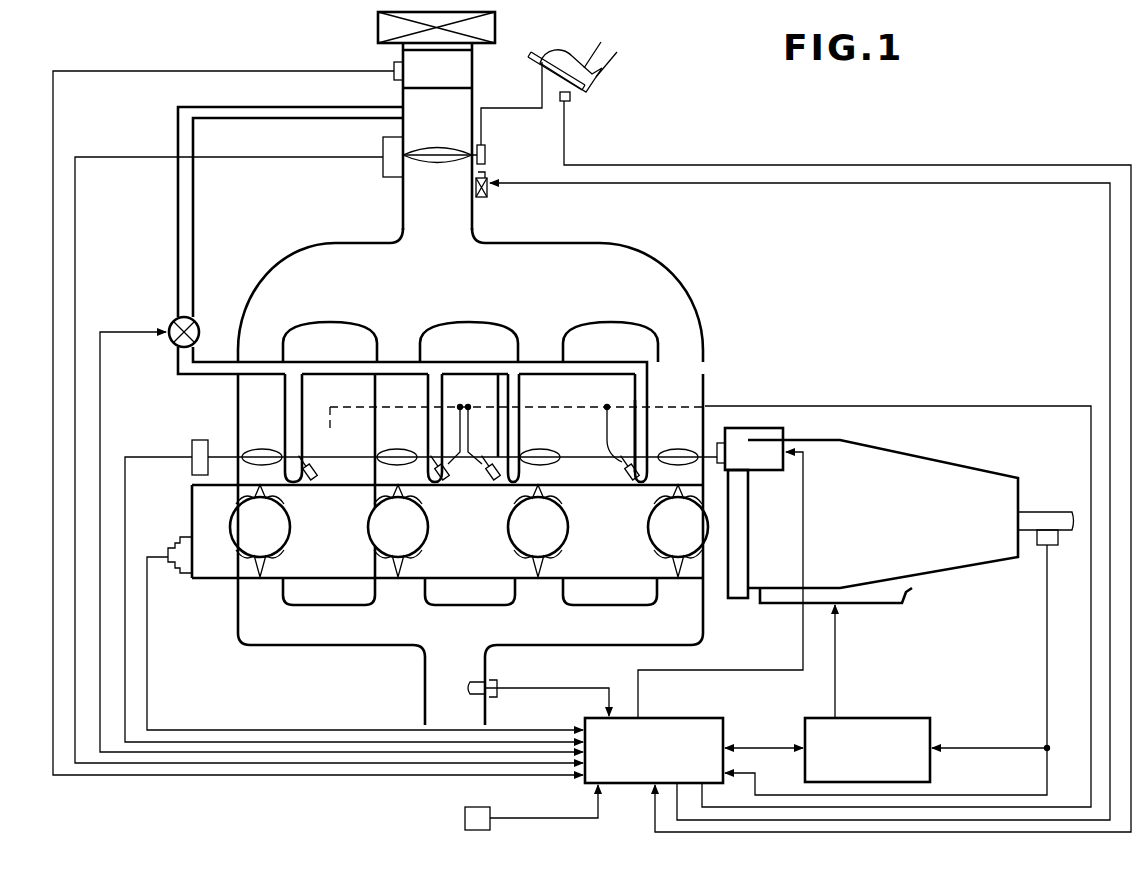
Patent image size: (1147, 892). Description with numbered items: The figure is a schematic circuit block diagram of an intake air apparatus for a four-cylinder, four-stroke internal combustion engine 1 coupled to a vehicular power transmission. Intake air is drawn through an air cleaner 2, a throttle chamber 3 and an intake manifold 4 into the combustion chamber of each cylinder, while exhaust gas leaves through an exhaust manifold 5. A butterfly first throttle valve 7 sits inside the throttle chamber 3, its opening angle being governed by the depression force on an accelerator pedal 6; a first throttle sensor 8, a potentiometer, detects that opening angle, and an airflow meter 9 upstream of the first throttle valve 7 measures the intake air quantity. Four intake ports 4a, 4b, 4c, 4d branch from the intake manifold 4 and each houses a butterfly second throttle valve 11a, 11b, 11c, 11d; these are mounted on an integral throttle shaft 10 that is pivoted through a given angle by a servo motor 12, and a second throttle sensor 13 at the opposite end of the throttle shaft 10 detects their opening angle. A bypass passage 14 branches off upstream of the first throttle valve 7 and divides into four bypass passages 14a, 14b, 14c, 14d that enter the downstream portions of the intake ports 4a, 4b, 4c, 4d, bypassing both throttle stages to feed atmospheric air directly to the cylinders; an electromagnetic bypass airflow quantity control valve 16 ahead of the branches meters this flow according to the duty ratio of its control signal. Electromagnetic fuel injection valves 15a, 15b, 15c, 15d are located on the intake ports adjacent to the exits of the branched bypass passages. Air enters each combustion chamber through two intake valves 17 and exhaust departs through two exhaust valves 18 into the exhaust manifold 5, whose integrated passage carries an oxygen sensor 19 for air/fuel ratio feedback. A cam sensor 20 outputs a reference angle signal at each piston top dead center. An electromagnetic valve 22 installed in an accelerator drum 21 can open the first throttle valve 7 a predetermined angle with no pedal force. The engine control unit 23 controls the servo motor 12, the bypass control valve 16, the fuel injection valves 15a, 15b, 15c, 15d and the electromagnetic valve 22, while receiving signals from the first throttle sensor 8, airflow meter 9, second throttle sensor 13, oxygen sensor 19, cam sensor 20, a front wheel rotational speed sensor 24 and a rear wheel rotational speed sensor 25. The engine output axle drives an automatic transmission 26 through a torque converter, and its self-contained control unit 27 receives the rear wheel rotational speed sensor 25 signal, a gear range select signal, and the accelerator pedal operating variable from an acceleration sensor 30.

The internal combustion engine 1 is at (700, 292).
The air cleaner 2 is at (378, 30).
The throttle chamber 3 is at (403, 212).
The intake manifold 4 is at (660, 262).
The intake port 4a is at (238, 394).
The intake port 4b is at (378, 392).
The intake port 4c is at (548, 388).
The intake port 4d is at (703, 382).
The exhaust manifold 5 is at (325, 648).
The accelerator pedal 6 is at (540, 62).
The first throttle valve 7 is at (437, 165).
The first throttle sensor 8 is at (383, 170).
The airflow meter 9 is at (470, 65).
The throttle shaft 10 is at (212, 447).
The second throttle valve 11a is at (262, 448).
The second throttle valve 11b is at (398, 449).
The second throttle valve 11c is at (543, 449).
The second throttle valve 11d is at (678, 448).
The servo motor 12 is at (760, 440).
The second throttle sensor 13 is at (196, 468).
The bypass passage 14 is at (193, 215).
The bypass passage 14a is at (302, 397).
The bypass passage 14b is at (440, 395).
The bypass passage 14c is at (490, 388).
The bypass passage 14d is at (630, 380).
The fuel injection valve 15a is at (314, 480).
The fuel injection valve 15b is at (445, 481).
The fuel injection valve 15c is at (493, 482).
The fuel injection valve 15d is at (630, 482).
The bypass airflow quantity control valve 16 is at (198, 320).
The intake valves 17 is at (240, 503).
The exhaust valves 18 is at (262, 570).
The oxygen sensor 19 is at (498, 682).
The cam sensor 20 is at (185, 576).
The accelerator drum 21 is at (487, 154).
The electromagnetic valve 22 is at (490, 198).
The engine control unit 23 is at (708, 718).
The front wheel rotational speed sensor 24 is at (465, 815).
The rear wheel rotational speed sensor 25 is at (1040, 548).
The automatic transmission 26 is at (940, 462).
The control unit 27 is at (932, 722).
The acceleration sensor 30 is at (573, 98).